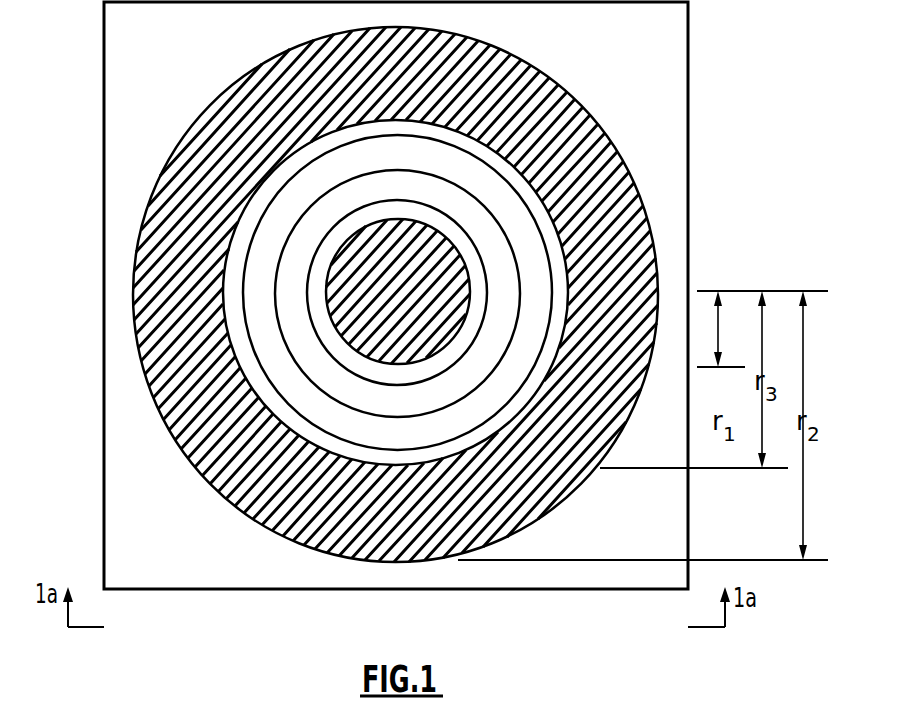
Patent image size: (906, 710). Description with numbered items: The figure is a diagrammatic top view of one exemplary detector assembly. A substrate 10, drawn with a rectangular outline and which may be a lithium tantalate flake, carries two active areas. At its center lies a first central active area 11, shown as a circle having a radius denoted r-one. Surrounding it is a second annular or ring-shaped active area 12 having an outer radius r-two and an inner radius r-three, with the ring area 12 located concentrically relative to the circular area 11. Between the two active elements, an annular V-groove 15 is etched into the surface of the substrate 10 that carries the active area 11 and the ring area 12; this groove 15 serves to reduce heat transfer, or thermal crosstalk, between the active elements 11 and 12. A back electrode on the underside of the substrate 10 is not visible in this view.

The substrate 10 is at (104, 112).
The first central active area 11 is at (417, 318).
The second annular active area 12 is at (580, 104).
The annular V-groove 15 is at (512, 237).